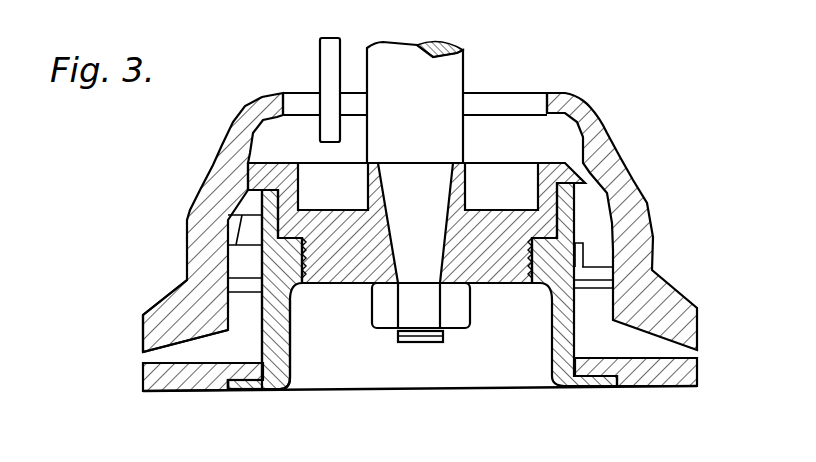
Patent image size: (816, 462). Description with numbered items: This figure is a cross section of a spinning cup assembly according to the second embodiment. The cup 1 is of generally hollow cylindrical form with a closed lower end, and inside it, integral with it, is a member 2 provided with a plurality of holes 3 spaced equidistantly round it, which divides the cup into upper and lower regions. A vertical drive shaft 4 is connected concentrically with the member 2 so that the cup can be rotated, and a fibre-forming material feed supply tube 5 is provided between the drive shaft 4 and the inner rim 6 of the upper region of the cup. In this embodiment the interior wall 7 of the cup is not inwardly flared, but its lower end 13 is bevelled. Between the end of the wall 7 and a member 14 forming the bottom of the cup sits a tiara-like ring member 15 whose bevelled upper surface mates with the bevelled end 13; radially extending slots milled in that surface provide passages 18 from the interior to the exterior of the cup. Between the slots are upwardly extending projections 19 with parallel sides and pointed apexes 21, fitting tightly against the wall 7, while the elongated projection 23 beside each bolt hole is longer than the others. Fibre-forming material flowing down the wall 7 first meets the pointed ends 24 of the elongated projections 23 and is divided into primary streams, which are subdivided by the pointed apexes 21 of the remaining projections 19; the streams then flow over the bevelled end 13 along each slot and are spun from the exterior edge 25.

The cup 1 is at (218, 160).
The member 2 is at (545, 165).
The holes 3 is at (257, 172).
The vertical drive shaft 4 is at (466, 70).
The fibre-forming material feed supply tube 5 is at (320, 52).
The inner rim 6 is at (545, 102).
The interior wall 7 is at (612, 262).
The bevelled lower end 13 is at (212, 333).
The member forming the bottom of the cup 14 is at (262, 387).
The tiara-like ring member 15 is at (212, 387).
The passages 18 is at (174, 356).
The projection 19 is at (258, 348).
The pointed apex 21 is at (250, 280).
The elongated projection 23 is at (240, 257).
The pointed ends 24 is at (232, 215).
The exterior edge 25 is at (178, 352).